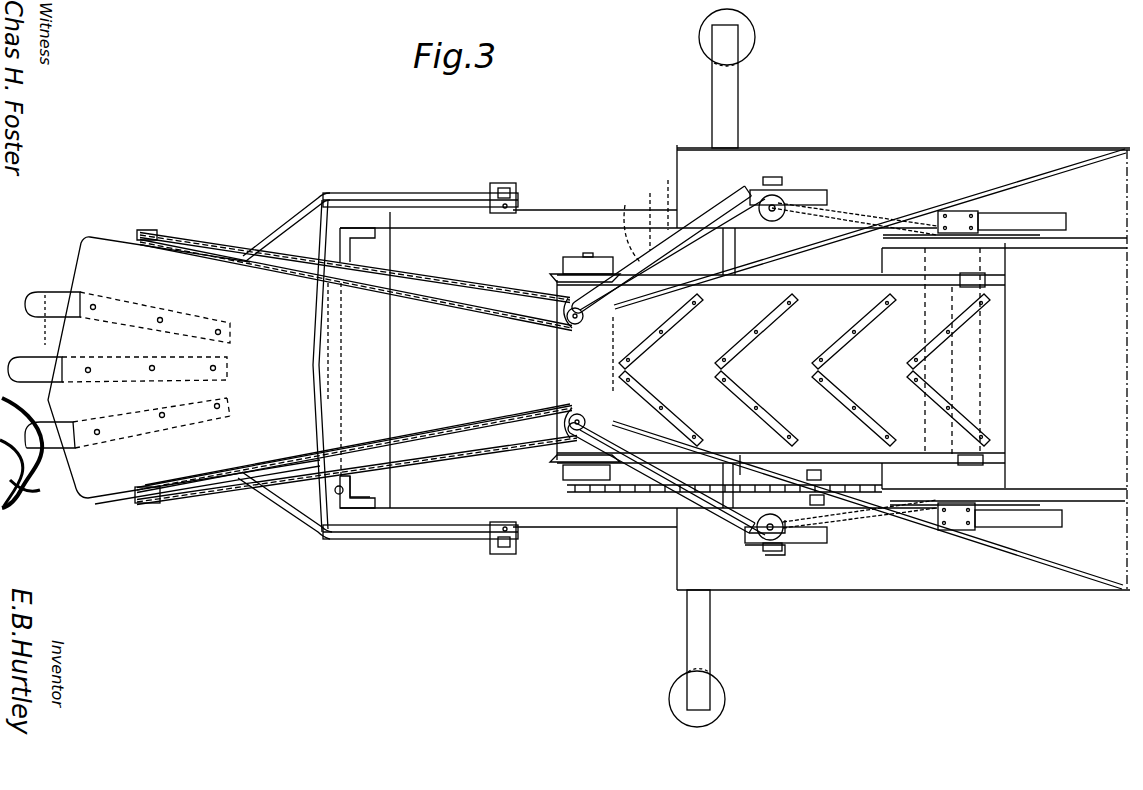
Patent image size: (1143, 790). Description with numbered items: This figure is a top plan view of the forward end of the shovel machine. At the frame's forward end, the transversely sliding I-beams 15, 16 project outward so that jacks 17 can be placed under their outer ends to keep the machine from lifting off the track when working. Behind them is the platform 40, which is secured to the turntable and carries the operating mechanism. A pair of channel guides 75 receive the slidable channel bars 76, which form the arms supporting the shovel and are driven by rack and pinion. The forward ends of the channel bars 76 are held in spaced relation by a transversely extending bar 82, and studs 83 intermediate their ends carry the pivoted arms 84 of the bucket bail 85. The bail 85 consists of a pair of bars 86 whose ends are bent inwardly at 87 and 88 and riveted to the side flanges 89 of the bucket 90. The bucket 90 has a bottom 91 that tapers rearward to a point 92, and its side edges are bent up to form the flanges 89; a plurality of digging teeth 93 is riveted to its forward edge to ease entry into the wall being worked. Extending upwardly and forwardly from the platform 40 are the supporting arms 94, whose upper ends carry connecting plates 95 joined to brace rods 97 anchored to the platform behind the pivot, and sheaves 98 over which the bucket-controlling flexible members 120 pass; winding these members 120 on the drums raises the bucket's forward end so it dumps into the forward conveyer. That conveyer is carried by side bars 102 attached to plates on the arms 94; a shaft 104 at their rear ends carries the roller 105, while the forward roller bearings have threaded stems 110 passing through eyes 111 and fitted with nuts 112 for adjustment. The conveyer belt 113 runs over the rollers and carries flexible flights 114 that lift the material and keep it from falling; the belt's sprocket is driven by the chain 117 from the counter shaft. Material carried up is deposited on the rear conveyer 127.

The I-beam 15 is at (700, 644).
The I-beam 16 is at (728, 128).
The jack 17 is at (748, 48).
The platform 40 is at (1048, 158).
The channel guide 75 is at (913, 210).
The channel bar 76 is at (513, 232).
The transversely extending bar 82 is at (348, 491).
The stud 83 is at (505, 556).
The arm of the bucket bail 84 is at (442, 197).
The bucket bail 85 is at (392, 193).
The bar of the bucket bail 86 is at (403, 540).
The inwardly bent end 87 is at (300, 534).
The inwardly bent end 88 is at (262, 492).
The side flange 89 is at (135, 503).
The bucket 90 is at (105, 503).
The bottom 91 is at (93, 477).
The pointed rear end 92 is at (42, 357).
The teeth or fingers 93 is at (43, 288).
The supporting arm 94 is at (647, 497).
The connecting plate 95 is at (590, 322).
The brace rod 97 is at (985, 198).
The sheave 98 is at (580, 330).
The side bar of the forward conveyer 102 is at (677, 497).
The shaft 104 is at (1000, 281).
The roller 105 is at (1004, 368).
The threaded stem 110 is at (617, 263).
The eye 111 is at (660, 220).
The nut 112 is at (634, 213).
The conveyer belt 113 is at (781, 374).
The flexible flight 114 is at (725, 346).
The chain 117 is at (740, 485).
The flexible member 120 is at (480, 313).
The rear conveyer 127 is at (1093, 234).